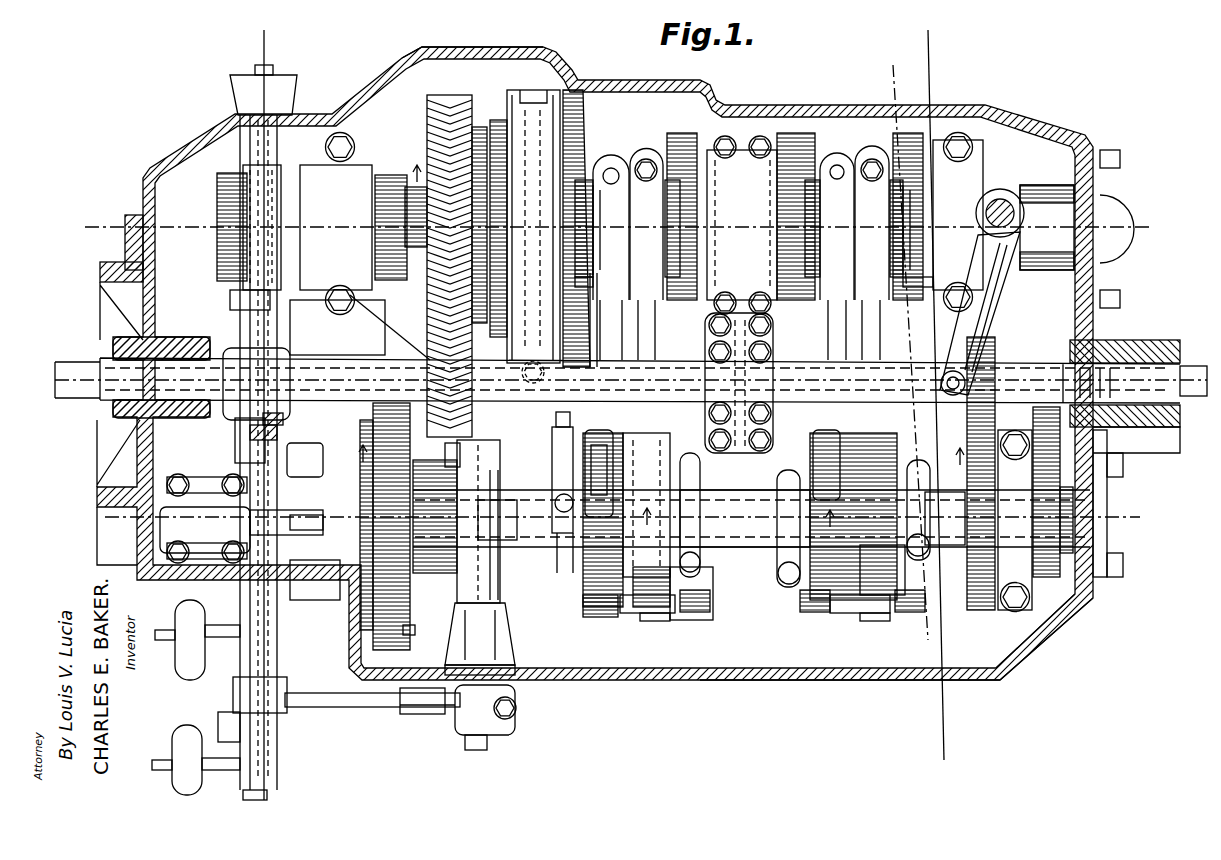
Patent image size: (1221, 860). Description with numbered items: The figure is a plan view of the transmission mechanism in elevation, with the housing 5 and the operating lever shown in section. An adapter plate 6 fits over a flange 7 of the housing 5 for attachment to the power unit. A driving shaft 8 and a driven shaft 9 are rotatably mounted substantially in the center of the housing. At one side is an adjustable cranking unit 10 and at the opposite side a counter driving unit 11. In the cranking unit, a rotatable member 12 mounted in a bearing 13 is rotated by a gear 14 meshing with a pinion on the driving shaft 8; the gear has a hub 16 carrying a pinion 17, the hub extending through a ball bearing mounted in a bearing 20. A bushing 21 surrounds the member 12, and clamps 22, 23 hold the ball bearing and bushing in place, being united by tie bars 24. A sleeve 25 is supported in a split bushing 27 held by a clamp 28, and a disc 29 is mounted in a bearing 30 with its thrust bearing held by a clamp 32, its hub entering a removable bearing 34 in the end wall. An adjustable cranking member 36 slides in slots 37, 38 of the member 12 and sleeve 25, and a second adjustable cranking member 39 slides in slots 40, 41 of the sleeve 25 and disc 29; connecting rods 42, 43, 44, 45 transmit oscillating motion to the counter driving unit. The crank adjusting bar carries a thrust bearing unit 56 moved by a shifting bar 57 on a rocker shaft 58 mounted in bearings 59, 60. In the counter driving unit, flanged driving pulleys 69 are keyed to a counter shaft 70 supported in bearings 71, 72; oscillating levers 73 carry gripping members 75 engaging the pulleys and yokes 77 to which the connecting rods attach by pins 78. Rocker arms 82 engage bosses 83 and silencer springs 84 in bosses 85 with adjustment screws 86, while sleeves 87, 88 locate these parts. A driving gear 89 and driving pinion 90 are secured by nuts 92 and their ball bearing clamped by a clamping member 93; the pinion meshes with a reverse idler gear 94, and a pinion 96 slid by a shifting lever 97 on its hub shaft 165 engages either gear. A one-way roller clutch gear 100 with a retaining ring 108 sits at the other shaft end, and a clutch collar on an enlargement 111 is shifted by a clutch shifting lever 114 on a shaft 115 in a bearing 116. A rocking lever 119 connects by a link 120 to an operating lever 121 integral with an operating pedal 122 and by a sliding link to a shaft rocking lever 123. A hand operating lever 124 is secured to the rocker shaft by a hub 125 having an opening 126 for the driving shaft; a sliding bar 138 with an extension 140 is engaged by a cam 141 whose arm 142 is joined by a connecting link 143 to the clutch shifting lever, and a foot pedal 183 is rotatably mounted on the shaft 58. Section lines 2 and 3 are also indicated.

The section line 2- 2 is at (619, 522).
The section line 3- 3 is at (613, 235).
The housing 5 is at (252, 36).
The adapter plate 6 is at (130, 215).
The flange 7 is at (100, 272).
The driving shaft 8 is at (110, 405).
The driven shaft 9 is at (1145, 450).
The adjustable cranking unit 10 is at (596, 100).
The counter driving unit 11 is at (744, 685).
The rotatable member 12 is at (575, 88).
The bearing 13 is at (525, 236).
The gear 14 is at (448, 93).
The hub 16 is at (410, 185).
The pinion 17 is at (390, 173).
The bearing 20 is at (336, 224).
The bushing 21 is at (555, 205).
The clamp 22 is at (360, 327).
The clamp 23 is at (555, 276).
The tie bars 24 is at (400, 90).
The sleeve 25 is at (798, 130).
The split bushing 27 is at (760, 130).
The clamp 28 is at (742, 225).
The disc 29 is at (905, 130).
The bearing 30 is at (980, 145).
The clamp 32 is at (931, 266).
The removable bearing 34 is at (1043, 185).
The adjustable cranking member 36 is at (575, 255).
The slot 37 is at (600, 175).
The slot 38 is at (655, 160).
The second adjustable cranking member 39 is at (790, 266).
The slot 40 is at (818, 212).
The slot 41 is at (903, 217).
The connecting rod 42 is at (598, 232).
The connecting rod 43 is at (805, 215).
The connecting rod 44 is at (858, 240).
The connecting rod 45 is at (912, 238).
The thrust bearing unit 56 is at (217, 182).
The shifting bar 57 is at (250, 249).
The rocker shaft 58 is at (235, 298).
The bearing 59 is at (296, 92).
The bearing 60 is at (282, 600).
The flanged driving pulleys 69 is at (623, 615).
The counter shaft 70 is at (540, 540).
The bearing 71 is at (175, 470).
The bearing 72 is at (1030, 615).
The oscillating levers 73 is at (590, 617).
The gripping members 75 is at (791, 635).
The yoke 77 is at (620, 515).
The pins 78 is at (712, 473).
The rocker arms 82 is at (700, 470).
The bosses 83 is at (943, 585).
The silencer springs 84 is at (552, 455).
The bosses 85 is at (552, 435).
The adjustment screws 86 is at (556, 418).
The sleeve 87 is at (948, 548).
The sleeve 88 is at (751, 532).
The driving gear 89 is at (1002, 676).
The driving pinion 90 is at (1085, 590).
The nuts 92 is at (1073, 525).
The clamping member 93 is at (1030, 578).
The reverse idler gear 94 is at (1070, 345).
The pinion 96 is at (990, 342).
The shifting lever 97 is at (995, 292).
The one-way roller clutch gear 100 is at (395, 640).
The retaining ring 108 is at (432, 537).
The enlargement 111 is at (518, 530).
The clutch shifting lever 114 is at (490, 465).
The shaft 115 is at (474, 752).
The bearing 116 is at (512, 640).
The rocking lever 119 is at (380, 710).
The link 120 is at (408, 714).
The operating lever 121 is at (218, 720).
The operating pedal 122 is at (280, 762).
The shaft rocking lever 123 is at (300, 690).
The hand operating lever 124 is at (285, 420).
The hub 125 is at (235, 430).
The opening 126 is at (285, 378).
The sliding bar 138 is at (256, 384).
The extension 140 is at (262, 450).
The cam 141 is at (310, 468).
The arm 142 is at (260, 512).
The connecting link 143 is at (345, 520).
The hub shaft 165 is at (1003, 196).
The foot pedal 183 is at (180, 672).